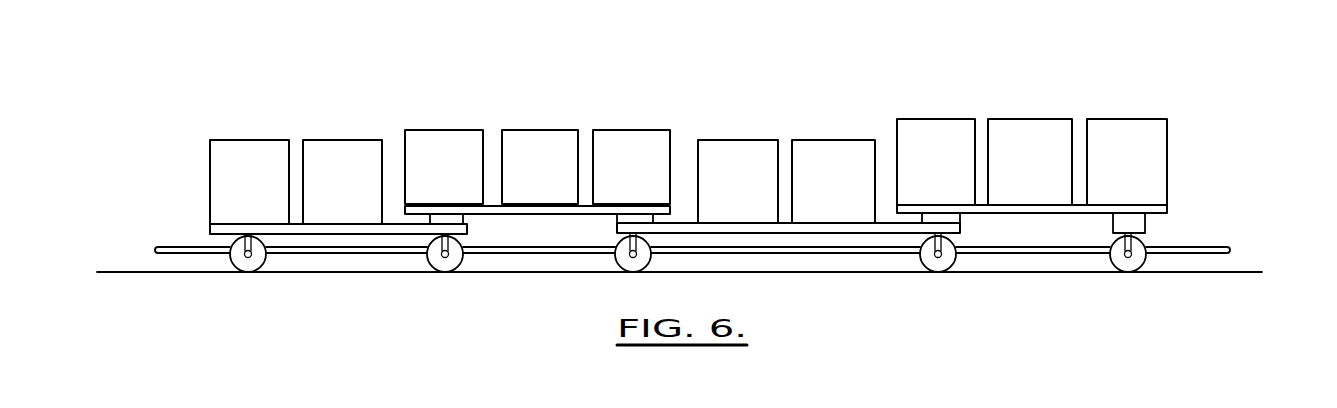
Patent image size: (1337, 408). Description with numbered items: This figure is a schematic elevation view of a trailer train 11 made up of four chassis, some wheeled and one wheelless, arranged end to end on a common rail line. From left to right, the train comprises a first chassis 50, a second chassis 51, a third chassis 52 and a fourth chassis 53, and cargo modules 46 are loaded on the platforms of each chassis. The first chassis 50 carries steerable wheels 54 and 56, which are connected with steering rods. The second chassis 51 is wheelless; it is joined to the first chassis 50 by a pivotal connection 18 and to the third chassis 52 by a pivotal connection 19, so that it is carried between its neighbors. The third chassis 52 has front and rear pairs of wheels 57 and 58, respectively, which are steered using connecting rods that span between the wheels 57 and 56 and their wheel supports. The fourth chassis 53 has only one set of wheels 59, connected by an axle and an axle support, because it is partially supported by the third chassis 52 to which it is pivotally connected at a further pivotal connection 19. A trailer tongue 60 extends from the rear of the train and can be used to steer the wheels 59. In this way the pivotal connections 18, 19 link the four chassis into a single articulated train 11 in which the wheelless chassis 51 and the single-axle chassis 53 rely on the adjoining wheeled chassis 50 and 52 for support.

The trailer train 11 is at (852, 80).
The pivotal connection 18 is at (466, 224).
The pivotal connection 19 is at (618, 223).
The cargo module 46 is at (460, 181).
The first chassis 50 is at (356, 233).
The second chassis 51 is at (545, 216).
The third chassis 52 is at (830, 234).
The fourth chassis 53 is at (1056, 214).
The steerable wheel 54 is at (248, 270).
The steerable wheel 56 is at (444, 271).
The front pair of wheels 57 is at (622, 268).
The rear pair of wheels 58 is at (935, 260).
The set of wheels 59 is at (1128, 265).
The trailer tongue 60 is at (1197, 246).